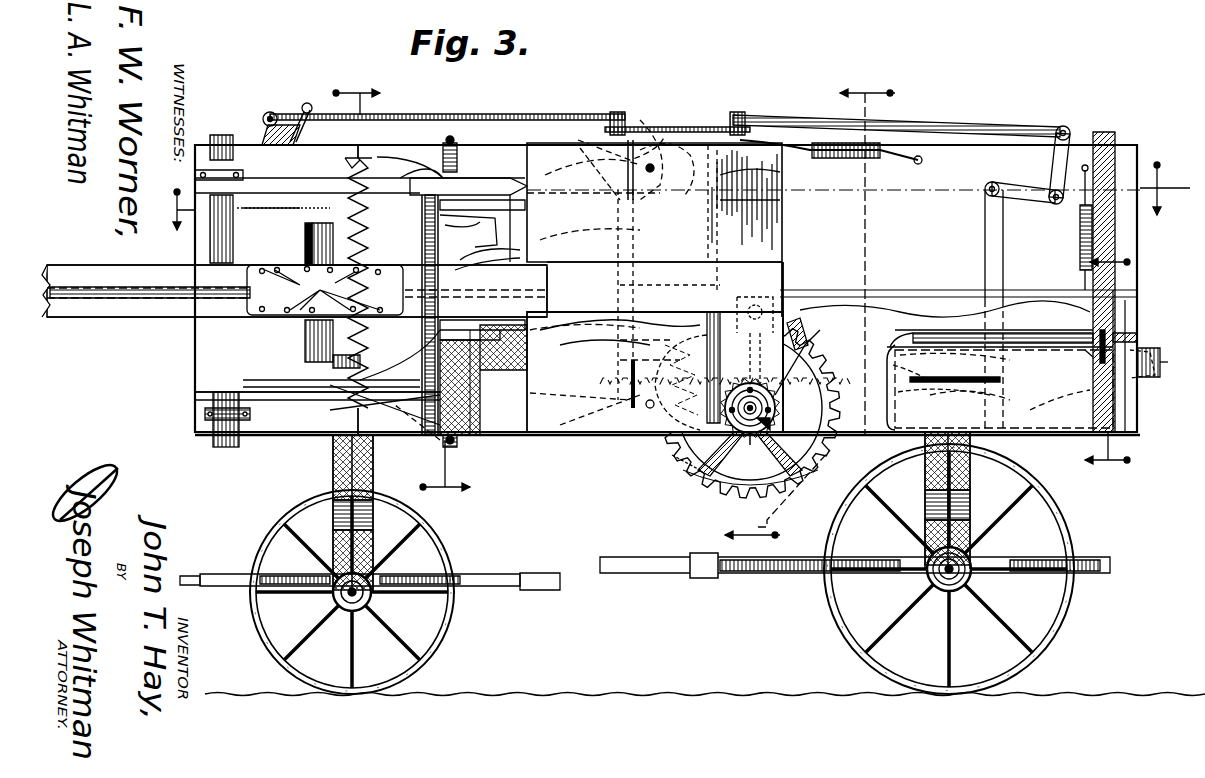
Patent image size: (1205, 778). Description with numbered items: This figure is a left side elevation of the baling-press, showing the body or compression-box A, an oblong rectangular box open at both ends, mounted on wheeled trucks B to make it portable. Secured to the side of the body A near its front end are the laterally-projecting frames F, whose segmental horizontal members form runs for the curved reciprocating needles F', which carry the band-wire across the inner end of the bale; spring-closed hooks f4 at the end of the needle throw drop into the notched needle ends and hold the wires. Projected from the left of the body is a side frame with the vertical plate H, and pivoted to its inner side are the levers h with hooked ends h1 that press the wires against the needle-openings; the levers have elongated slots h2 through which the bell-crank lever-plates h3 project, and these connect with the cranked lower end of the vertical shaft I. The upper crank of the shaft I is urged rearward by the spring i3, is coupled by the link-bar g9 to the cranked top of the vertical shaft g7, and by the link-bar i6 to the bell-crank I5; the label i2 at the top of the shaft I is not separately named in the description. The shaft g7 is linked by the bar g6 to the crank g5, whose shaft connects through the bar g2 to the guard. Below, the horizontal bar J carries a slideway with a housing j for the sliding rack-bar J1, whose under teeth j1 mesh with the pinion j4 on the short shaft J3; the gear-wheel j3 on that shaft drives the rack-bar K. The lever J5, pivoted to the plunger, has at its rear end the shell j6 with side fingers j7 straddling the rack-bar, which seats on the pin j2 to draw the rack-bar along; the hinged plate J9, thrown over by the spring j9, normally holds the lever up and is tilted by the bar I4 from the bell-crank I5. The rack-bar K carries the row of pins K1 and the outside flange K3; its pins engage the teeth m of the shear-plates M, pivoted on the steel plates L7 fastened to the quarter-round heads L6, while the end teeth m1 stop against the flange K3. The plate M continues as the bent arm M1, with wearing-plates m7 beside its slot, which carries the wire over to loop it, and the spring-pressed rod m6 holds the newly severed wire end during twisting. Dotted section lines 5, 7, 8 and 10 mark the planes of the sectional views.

The body or compression-box A is at (282, 437).
The wheeled trucks B is at (645, 569).
The laterally-projecting frames F is at (360, 162).
The curved needles F' is at (317, 409).
The vertical wall or plate H is at (655, 287).
The levers h is at (667, 169).
The hooked ends of levers h1 is at (540, 388).
The elongated longitudinal slots h2 is at (615, 160).
The transverse lever-plates h3 is at (635, 165).
The vertical shaft I is at (725, 272).
The bar I4 is at (988, 238).
The bell-crank I5 is at (1058, 163).
The clip i2 is at (738, 112).
The spring i3 is at (835, 160).
The link-bar i6 is at (970, 125).
The horizontal bar J is at (1021, 387).
The sliding rack-bar J1 is at (1102, 362).
The short shaft J3 is at (749, 434).
The lever J5 is at (915, 300).
The plate J9 is at (956, 324).
The housing j is at (725, 363).
The teeth of rack-bar j1 is at (920, 385).
The pin j2 is at (935, 378).
The gear-wheel j3 is at (684, 472).
The pinion j4 is at (785, 398).
The shell j6 is at (1087, 323).
The side fingers j7 is at (1095, 358).
The spring j9 is at (1080, 245).
The rack-bar K is at (143, 312).
The pins or teeth of rack-bar K1 is at (325, 290).
The longitudinal outside flange K3 is at (100, 300).
The quarter-round heads L6 is at (440, 160).
The steel plates L7 is at (360, 215).
The shear-plates M is at (455, 259).
The arm M1 is at (483, 379).
The row of teeth m is at (366, 290).
The stop teeth m1 is at (360, 410).
The spring-pressed rod m6 is at (458, 150).
The wearing-plates m7 is at (354, 146).
The spring-closed hooks f4 is at (480, 237).
The bar g2 is at (289, 135).
The crank g5 is at (262, 118).
The bar g6 is at (485, 114).
The vertical shaft g7 is at (617, 112).
The link-bar g9 is at (690, 128).
The section line 5 is at (673, 196).
The section line 7 is at (810, 314).
The section line 8 is at (401, 293).
The section line 10 is at (1107, 363).